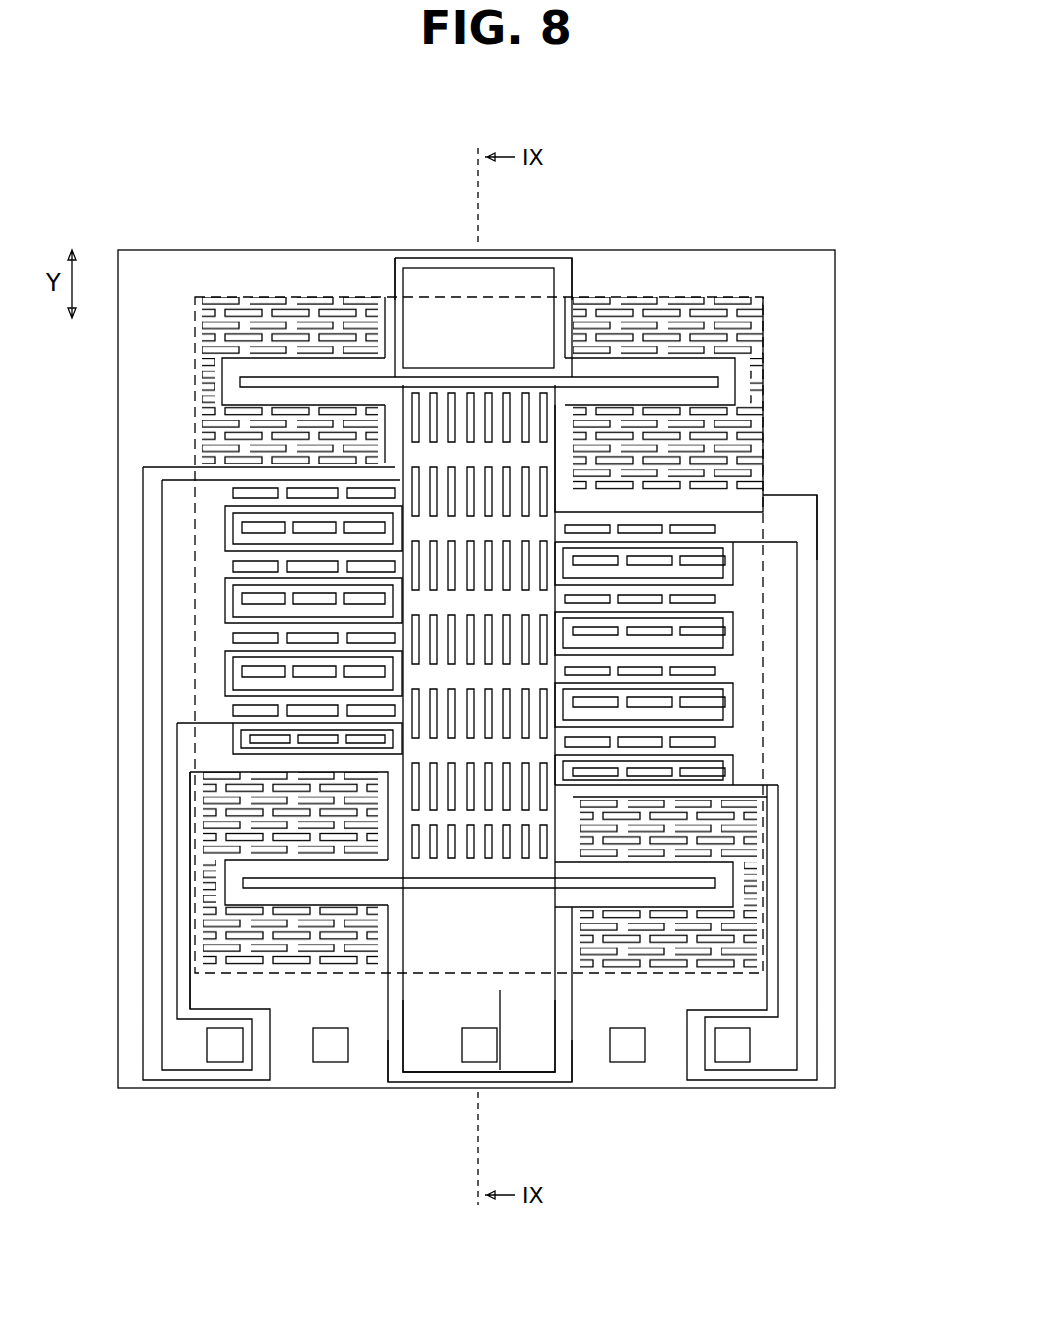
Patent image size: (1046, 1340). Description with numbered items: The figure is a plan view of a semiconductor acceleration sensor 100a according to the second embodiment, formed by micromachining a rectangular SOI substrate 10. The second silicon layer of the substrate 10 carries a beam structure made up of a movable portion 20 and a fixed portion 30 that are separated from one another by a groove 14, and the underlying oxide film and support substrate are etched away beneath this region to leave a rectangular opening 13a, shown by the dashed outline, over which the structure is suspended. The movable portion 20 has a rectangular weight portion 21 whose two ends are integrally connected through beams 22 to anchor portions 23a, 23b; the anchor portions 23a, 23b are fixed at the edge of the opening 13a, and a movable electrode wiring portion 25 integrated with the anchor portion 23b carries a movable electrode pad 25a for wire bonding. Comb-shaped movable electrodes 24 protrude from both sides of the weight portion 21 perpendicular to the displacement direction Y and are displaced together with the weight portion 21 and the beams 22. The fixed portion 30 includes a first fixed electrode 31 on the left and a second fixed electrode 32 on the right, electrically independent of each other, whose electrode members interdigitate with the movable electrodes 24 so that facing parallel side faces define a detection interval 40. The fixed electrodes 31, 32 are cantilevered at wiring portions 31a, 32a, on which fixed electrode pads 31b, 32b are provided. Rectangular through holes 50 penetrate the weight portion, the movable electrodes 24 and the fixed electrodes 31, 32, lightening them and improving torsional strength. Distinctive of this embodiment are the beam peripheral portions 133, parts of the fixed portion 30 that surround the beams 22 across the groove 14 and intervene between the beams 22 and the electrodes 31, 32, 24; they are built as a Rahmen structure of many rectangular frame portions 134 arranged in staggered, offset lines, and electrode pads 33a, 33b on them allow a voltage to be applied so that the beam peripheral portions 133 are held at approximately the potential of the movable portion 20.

The SOI substrate 10 is at (708, 238).
The semiconductor acceleration sensor 100a is at (176, 238).
The opening 13a is at (818, 497).
The groove 14 is at (386, 272).
The movable portion 20 is at (425, 455).
The weight portion 21 is at (620, 495).
The beams 22 is at (718, 382).
The anchor portion 23a is at (528, 285).
The anchor portion 23b is at (440, 1050).
The movable electrodes 24 is at (260, 530).
The movable electrode wiring portion 25 is at (528, 1015).
The movable electrode pad 25a is at (488, 1050).
The fixed portion 30 is at (808, 285).
The first fixed electrode 31 is at (262, 480).
The wiring portion 31a is at (170, 706).
The fixed electrode pad 31b is at (218, 1050).
The second fixed electrode 32 is at (690, 575).
The wiring portion 32a is at (780, 702).
The fixed electrode pad 32b is at (735, 1050).
The electrode pad 33a is at (328, 1050).
The electrode pad 33b is at (628, 1050).
The detection interval 40 is at (240, 498).
The through holes 50 is at (255, 445).
The beam peripheral portion 133 is at (386, 272).
The rectangular frame portions 134 is at (270, 298).